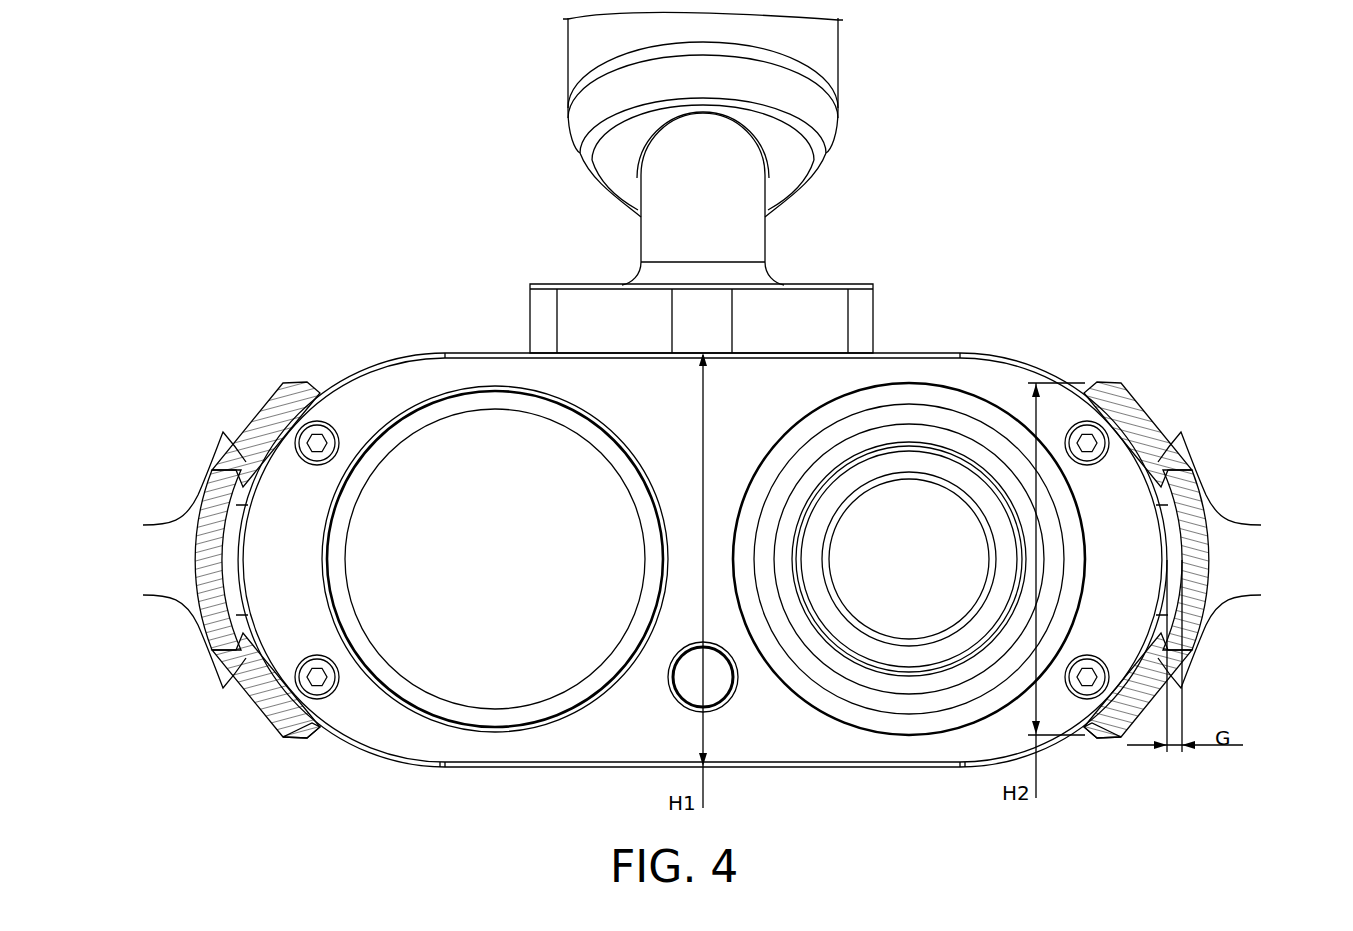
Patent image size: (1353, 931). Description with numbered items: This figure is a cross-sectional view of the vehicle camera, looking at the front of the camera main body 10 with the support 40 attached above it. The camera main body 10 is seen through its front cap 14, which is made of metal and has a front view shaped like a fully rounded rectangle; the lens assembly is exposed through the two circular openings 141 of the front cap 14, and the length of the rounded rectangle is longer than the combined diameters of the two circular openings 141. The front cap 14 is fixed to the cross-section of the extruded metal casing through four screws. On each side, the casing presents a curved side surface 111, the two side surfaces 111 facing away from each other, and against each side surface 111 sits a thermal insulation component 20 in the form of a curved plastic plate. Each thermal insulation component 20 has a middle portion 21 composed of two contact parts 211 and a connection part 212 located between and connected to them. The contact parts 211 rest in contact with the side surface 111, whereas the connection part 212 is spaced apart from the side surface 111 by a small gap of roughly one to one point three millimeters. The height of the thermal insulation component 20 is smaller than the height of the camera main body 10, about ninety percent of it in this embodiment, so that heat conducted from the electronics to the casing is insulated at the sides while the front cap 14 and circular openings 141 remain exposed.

The camera main body 10 is at (488, 340).
The front cap 14 is at (760, 735).
The thermal insulation component 20 is at (702, 548).
The middle portion 21 is at (702, 560).
The contact part 211 is at (1297, 600).
The connection part 212 is at (200, 566).
The support 40 is at (806, 102).
The side surface 111 is at (305, 730).
The circular opening 141 is at (414, 731).